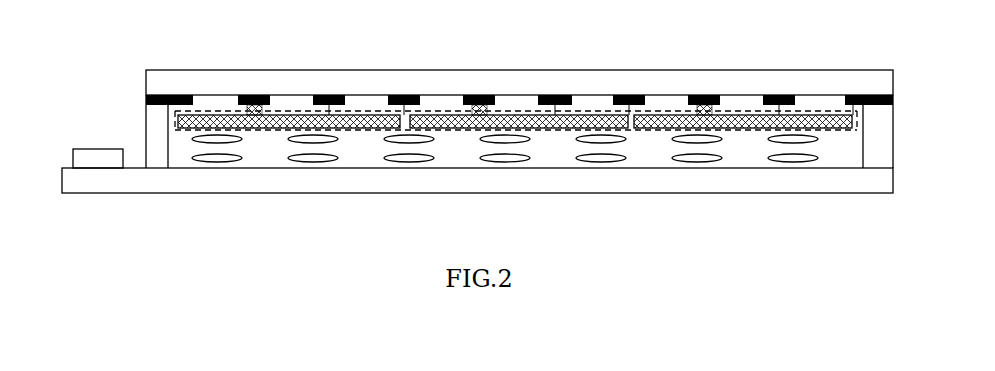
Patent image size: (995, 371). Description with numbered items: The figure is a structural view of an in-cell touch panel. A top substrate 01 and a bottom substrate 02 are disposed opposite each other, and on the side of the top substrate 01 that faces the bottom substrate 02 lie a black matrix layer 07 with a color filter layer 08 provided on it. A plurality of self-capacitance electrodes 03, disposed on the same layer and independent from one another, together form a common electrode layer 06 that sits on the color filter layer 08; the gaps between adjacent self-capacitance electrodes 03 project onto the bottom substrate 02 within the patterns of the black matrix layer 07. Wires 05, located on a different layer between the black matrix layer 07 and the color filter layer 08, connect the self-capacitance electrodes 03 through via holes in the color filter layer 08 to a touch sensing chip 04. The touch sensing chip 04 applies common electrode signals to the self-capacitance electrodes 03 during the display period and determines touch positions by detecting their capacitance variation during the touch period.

The top substrate 01 is at (245, 78).
The bottom substrate 02 is at (650, 181).
The self-capacitance electrodes 03 is at (348, 113).
The touch sensing chip 04 is at (98, 167).
The wires 05 is at (253, 108).
The common electrode layer 06 is at (172, 121).
The black matrix layer 07 is at (553, 97).
The color filter layer 08 is at (663, 95).